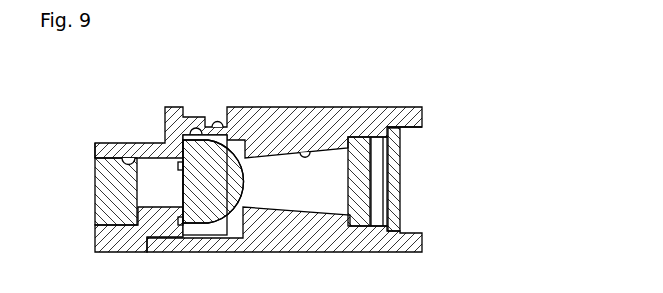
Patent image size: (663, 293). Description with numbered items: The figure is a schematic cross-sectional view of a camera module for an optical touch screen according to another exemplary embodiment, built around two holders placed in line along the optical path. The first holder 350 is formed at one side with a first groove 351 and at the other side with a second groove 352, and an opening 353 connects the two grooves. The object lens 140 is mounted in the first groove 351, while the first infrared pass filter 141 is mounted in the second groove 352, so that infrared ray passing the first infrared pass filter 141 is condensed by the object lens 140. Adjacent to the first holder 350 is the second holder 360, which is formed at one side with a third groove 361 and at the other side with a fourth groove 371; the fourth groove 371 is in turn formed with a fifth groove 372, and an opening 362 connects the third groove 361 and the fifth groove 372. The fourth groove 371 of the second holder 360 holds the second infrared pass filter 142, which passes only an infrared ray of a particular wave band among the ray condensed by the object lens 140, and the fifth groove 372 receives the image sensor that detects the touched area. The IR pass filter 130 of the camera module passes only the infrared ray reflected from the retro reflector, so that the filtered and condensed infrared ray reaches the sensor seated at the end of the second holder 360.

The IR pass filter 130 is at (398, 177).
The object lens 140 is at (241, 195).
The first infrared pass filter 141 is at (110, 193).
The second infrared pass filter 142 is at (358, 222).
The first holder 350 is at (175, 112).
The first groove 351 is at (200, 133).
The second groove 352 is at (128, 163).
The opening 353 is at (182, 188).
The second holder 360 is at (278, 118).
The third groove 361 is at (222, 118).
The opening 362 is at (305, 152).
The fourth groove 371 is at (408, 128).
The fifth groove 372 is at (378, 137).